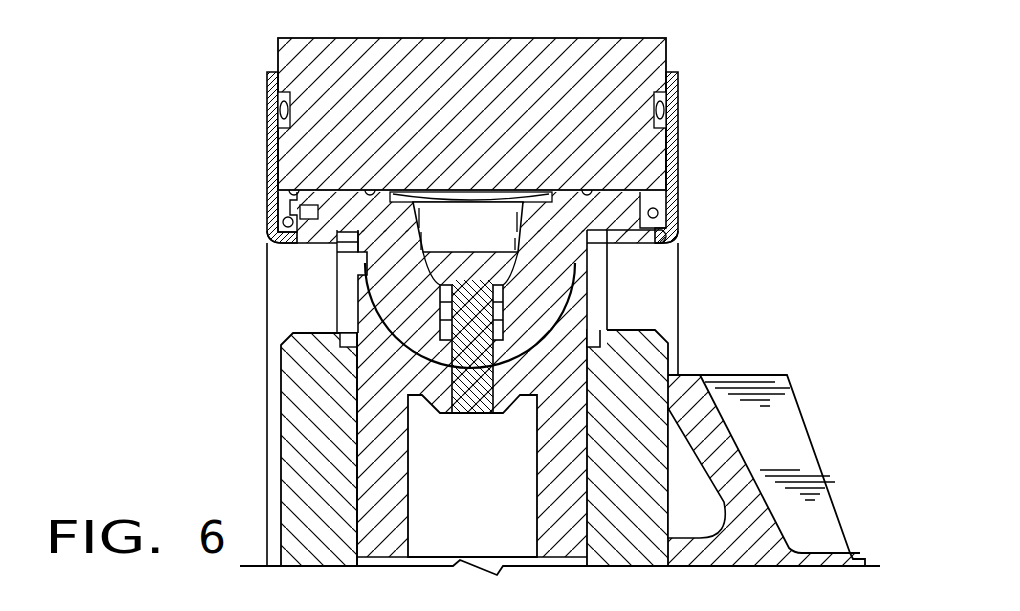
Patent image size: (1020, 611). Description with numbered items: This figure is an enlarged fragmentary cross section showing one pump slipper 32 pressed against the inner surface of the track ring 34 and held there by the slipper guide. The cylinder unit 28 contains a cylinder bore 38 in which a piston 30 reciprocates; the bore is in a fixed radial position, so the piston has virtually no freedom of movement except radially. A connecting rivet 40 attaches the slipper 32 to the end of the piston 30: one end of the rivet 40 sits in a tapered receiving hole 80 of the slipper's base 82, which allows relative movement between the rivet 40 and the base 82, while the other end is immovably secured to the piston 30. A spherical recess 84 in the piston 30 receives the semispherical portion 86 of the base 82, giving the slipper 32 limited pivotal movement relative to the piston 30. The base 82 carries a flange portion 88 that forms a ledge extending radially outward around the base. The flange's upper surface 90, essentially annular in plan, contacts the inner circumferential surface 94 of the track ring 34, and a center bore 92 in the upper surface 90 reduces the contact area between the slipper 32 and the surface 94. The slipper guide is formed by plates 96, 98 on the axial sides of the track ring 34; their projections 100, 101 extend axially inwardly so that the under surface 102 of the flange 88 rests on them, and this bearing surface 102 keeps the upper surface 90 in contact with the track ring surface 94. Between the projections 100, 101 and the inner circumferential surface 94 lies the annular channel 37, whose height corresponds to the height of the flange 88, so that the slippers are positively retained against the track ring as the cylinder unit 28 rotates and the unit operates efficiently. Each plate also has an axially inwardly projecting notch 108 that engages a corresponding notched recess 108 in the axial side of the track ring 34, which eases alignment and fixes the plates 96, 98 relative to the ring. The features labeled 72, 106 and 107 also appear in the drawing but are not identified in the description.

The cylinder unit 28 is at (290, 385).
The piston 30 is at (369, 449).
The slipper 32 is at (325, 251).
The track ring 34 is at (457, 114).
The annular channel 37 is at (674, 160).
The cylinder bore 38 is at (372, 484).
The connecting rivet 40 is at (461, 370).
The support bracket 72 is at (757, 449).
The tapered receiving hole 80 is at (500, 342).
The base 82 is at (531, 280).
The spherical recess 84 is at (378, 287).
The semispherical portion 86 is at (568, 310).
The flange portion 88 is at (290, 212).
The upper surface 90 is at (371, 188).
The center bore 92 is at (466, 192).
The inner circumferential surface 94 is at (294, 188).
The plate 96 is at (702, 172).
The plate 98 is at (262, 155).
The projection 100 is at (638, 232).
The projection 101 is at (293, 243).
The bearing surface 102 is at (300, 228).
The right seal 106 is at (674, 116).
The left seal 107 is at (285, 115).
The notch 108 is at (291, 108).